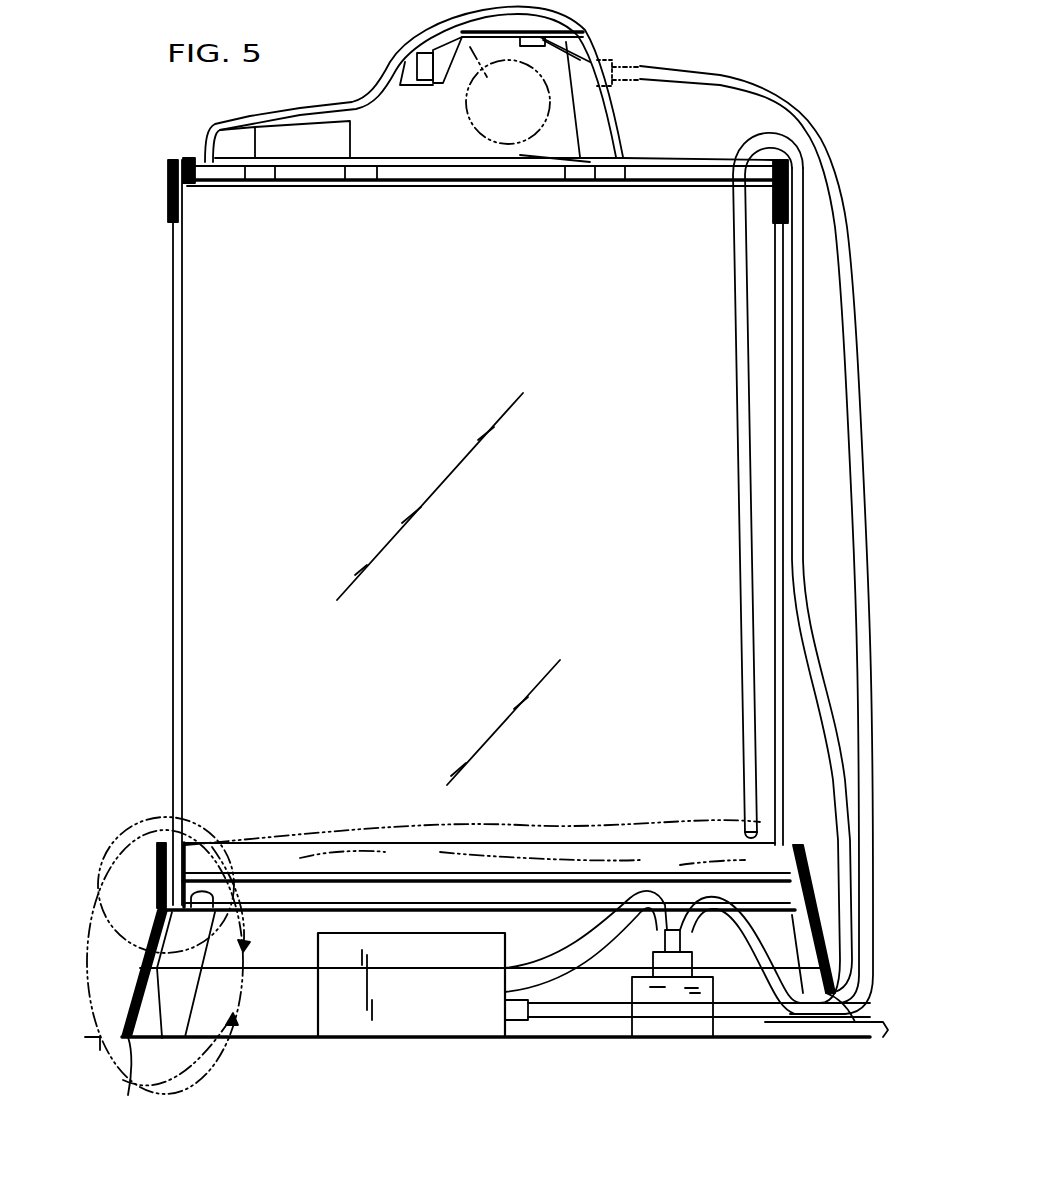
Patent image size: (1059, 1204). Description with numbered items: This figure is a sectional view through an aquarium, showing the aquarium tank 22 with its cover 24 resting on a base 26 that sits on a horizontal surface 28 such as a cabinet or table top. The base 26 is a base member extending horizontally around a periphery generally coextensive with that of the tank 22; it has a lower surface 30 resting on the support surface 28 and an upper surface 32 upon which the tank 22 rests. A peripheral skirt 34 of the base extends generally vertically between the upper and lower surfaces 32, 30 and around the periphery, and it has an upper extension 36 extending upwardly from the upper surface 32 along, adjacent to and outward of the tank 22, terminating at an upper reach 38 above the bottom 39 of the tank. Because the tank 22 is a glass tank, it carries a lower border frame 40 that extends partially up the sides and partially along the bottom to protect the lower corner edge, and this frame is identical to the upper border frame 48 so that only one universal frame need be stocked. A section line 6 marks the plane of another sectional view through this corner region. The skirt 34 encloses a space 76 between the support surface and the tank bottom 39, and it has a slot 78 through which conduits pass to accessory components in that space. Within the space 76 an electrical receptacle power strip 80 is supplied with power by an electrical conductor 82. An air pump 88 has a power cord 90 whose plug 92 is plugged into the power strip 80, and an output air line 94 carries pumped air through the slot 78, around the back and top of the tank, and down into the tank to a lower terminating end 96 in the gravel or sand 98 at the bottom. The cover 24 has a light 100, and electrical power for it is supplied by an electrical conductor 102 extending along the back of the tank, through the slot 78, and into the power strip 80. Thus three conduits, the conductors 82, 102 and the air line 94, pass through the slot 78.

The section line 6— 6 is at (195, 966).
The aquarium tank 22 is at (178, 466).
The cover 24 is at (212, 128).
The base 26 is at (108, 962).
The horizontal surface 28 is at (90, 1068).
The lower surface 30 is at (128, 1080).
The upper surface 32 is at (212, 912).
The peripheral skirt 34 is at (128, 1008).
The upper extension 36 is at (153, 873).
The upper reach 38 is at (156, 838).
The bottom 39 is at (413, 878).
The lower border frame 40 is at (182, 857).
The upper border frame 48 is at (170, 178).
The space 76 is at (292, 1032).
The slot 78 is at (845, 1003).
The electrical receptacle power strip 80 is at (672, 1027).
The electrical conductor 82 is at (872, 1027).
The air pump 88 is at (447, 1025).
The power cord 90 is at (583, 935).
The plug 92 is at (635, 983).
The air line 94 is at (740, 392).
The lower terminating end 96 is at (745, 828).
The gravel or sand 98 is at (655, 828).
The light 100 is at (440, 24).
The electrical conductor 102 is at (738, 75).